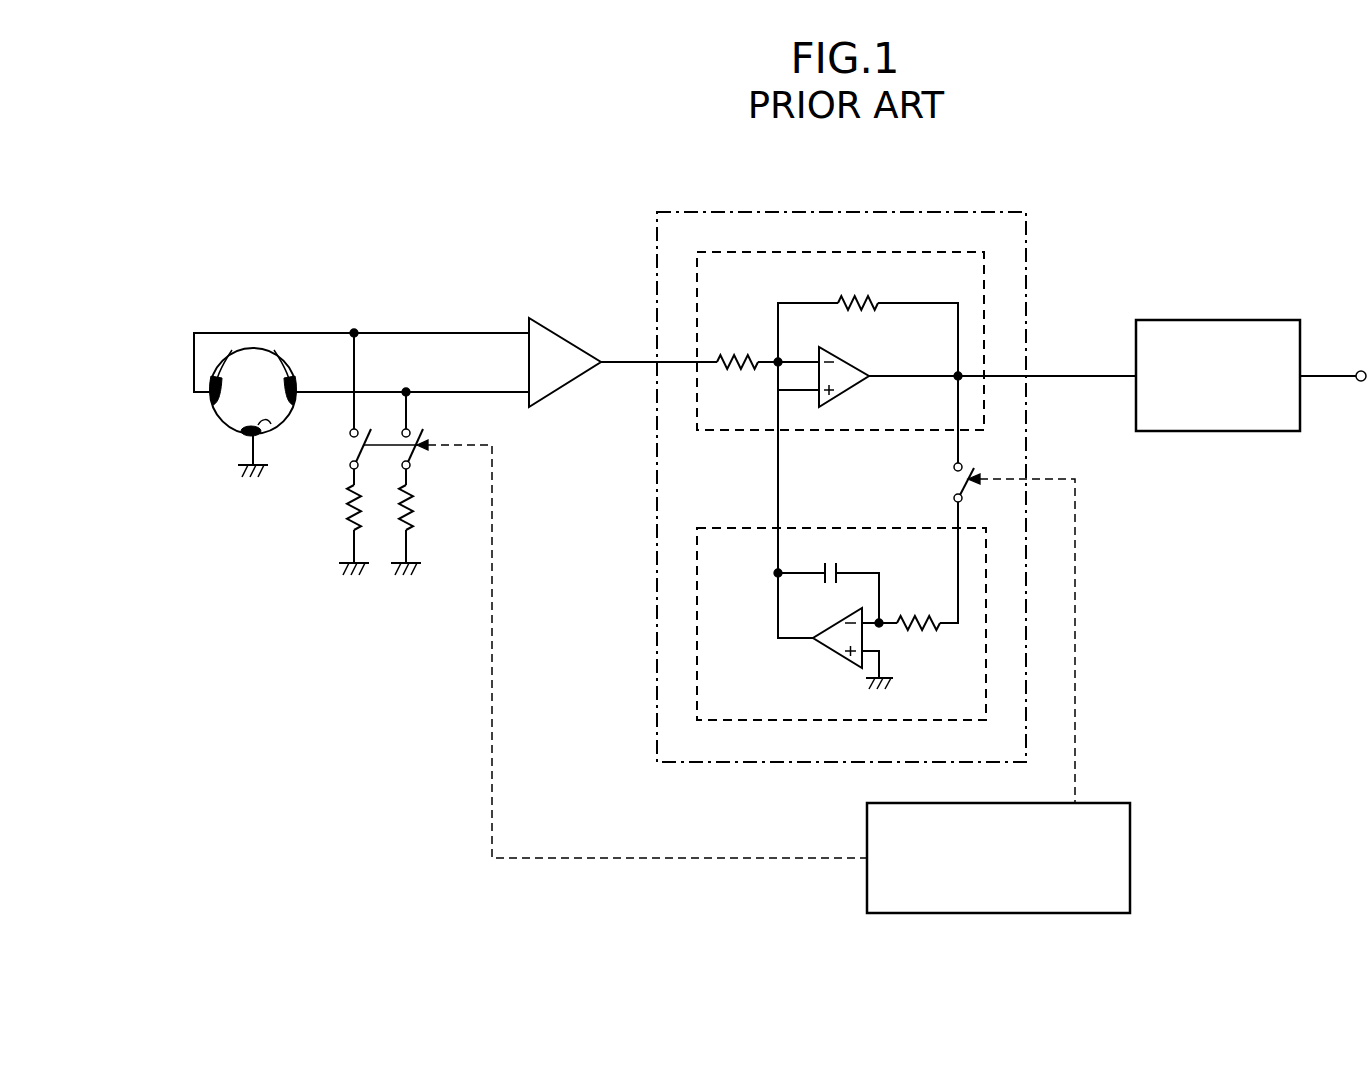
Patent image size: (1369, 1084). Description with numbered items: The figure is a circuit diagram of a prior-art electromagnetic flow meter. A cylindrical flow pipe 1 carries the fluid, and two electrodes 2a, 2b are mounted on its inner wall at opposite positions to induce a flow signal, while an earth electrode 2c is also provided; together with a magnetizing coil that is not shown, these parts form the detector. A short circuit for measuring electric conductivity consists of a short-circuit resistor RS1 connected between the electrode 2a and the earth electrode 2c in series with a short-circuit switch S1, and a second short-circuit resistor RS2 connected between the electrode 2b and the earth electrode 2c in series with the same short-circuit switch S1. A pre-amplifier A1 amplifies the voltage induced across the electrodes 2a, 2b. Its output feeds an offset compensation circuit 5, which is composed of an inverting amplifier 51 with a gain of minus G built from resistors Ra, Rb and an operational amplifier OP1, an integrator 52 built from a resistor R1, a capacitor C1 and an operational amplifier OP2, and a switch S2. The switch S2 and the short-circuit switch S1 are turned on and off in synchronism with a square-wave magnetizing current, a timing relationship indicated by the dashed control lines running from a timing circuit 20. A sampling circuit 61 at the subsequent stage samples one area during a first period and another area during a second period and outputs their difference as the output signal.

The flow pipe 1 is at (215, 418).
The electrode 2a is at (232, 350).
The electrode 2b is at (274, 350).
The earth electrode 2c is at (265, 427).
The offset compensation circuit 5 is at (885, 212).
The inverting amplifier 51 is at (768, 252).
The integrator 52 is at (740, 528).
The sampling circuit 61 is at (1218, 320).
The timing circuit 20 is at (1130, 855).
The short-circuit switch S1 is at (608, 593).
The switch S2 is at (1014, 633).
The short-circuit resistor RS1 is at (329, 522).
The short-circuit resistor RS2 is at (424, 522).
The pre-amplifier A1 is at (623, 362).
The resistor Ra is at (768, 350).
The resistor Rb is at (868, 368).
The resistor R1 is at (927, 583).
The capacitor C1 is at (826, 580).
The operational amplifier OP1 is at (845, 354).
The operational amplifier OP2 is at (835, 657).